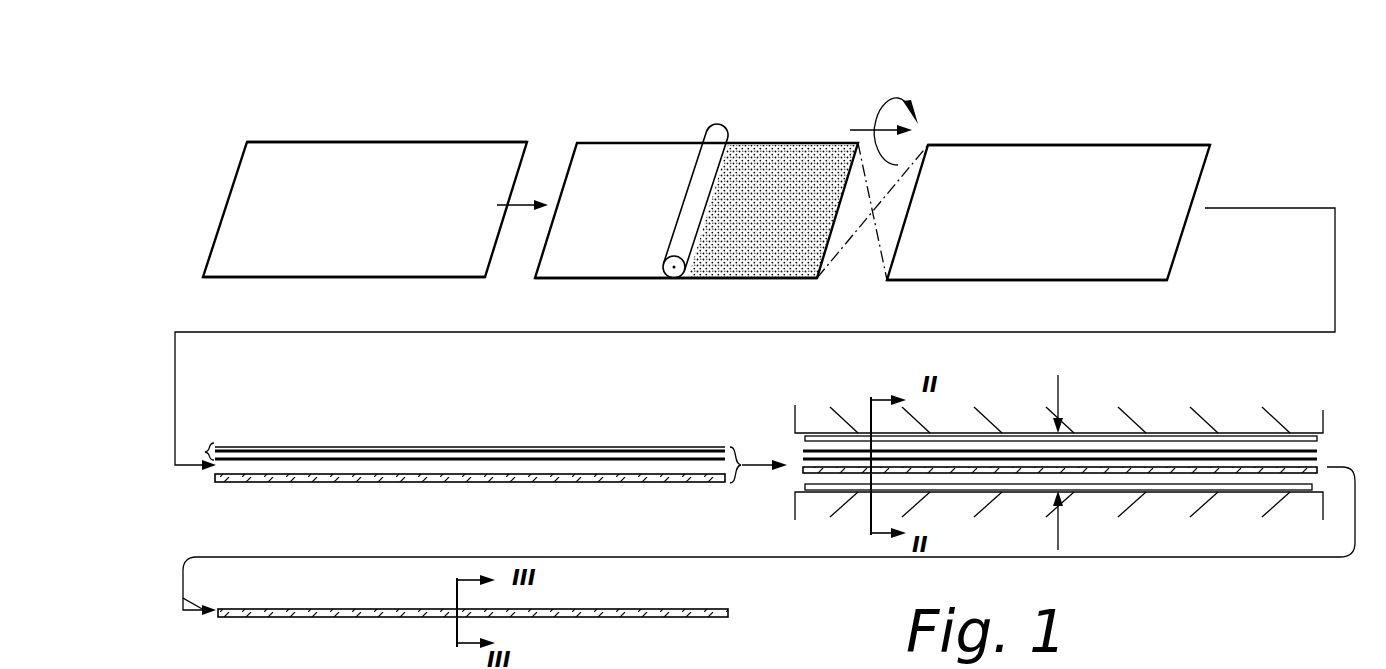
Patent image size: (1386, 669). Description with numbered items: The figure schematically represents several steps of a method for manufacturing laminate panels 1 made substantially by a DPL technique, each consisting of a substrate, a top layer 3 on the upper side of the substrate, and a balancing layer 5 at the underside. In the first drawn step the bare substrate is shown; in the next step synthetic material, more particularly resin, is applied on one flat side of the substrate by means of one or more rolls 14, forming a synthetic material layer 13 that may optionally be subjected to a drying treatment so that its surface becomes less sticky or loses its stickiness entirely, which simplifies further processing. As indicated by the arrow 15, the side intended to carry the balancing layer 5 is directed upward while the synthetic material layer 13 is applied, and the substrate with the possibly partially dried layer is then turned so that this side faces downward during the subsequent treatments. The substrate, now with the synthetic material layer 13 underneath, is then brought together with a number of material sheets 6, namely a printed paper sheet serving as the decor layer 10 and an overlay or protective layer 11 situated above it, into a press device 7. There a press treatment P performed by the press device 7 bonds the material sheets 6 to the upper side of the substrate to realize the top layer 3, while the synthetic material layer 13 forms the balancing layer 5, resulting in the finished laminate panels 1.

The laminate panel 1 is at (624, 604).
The top layer 3 is at (209, 450).
The balancing layer 5 is at (746, 158).
The material sheets 6 is at (484, 448).
The press device 7 is at (1236, 408).
The decor layer 10 is at (604, 458).
The overlay or protective layer 11 is at (540, 448).
The synthetic material layer 13 is at (775, 178).
The rolls 14 is at (718, 131).
The arrow 15 is at (896, 99).
The press treatment P is at (1094, 399).